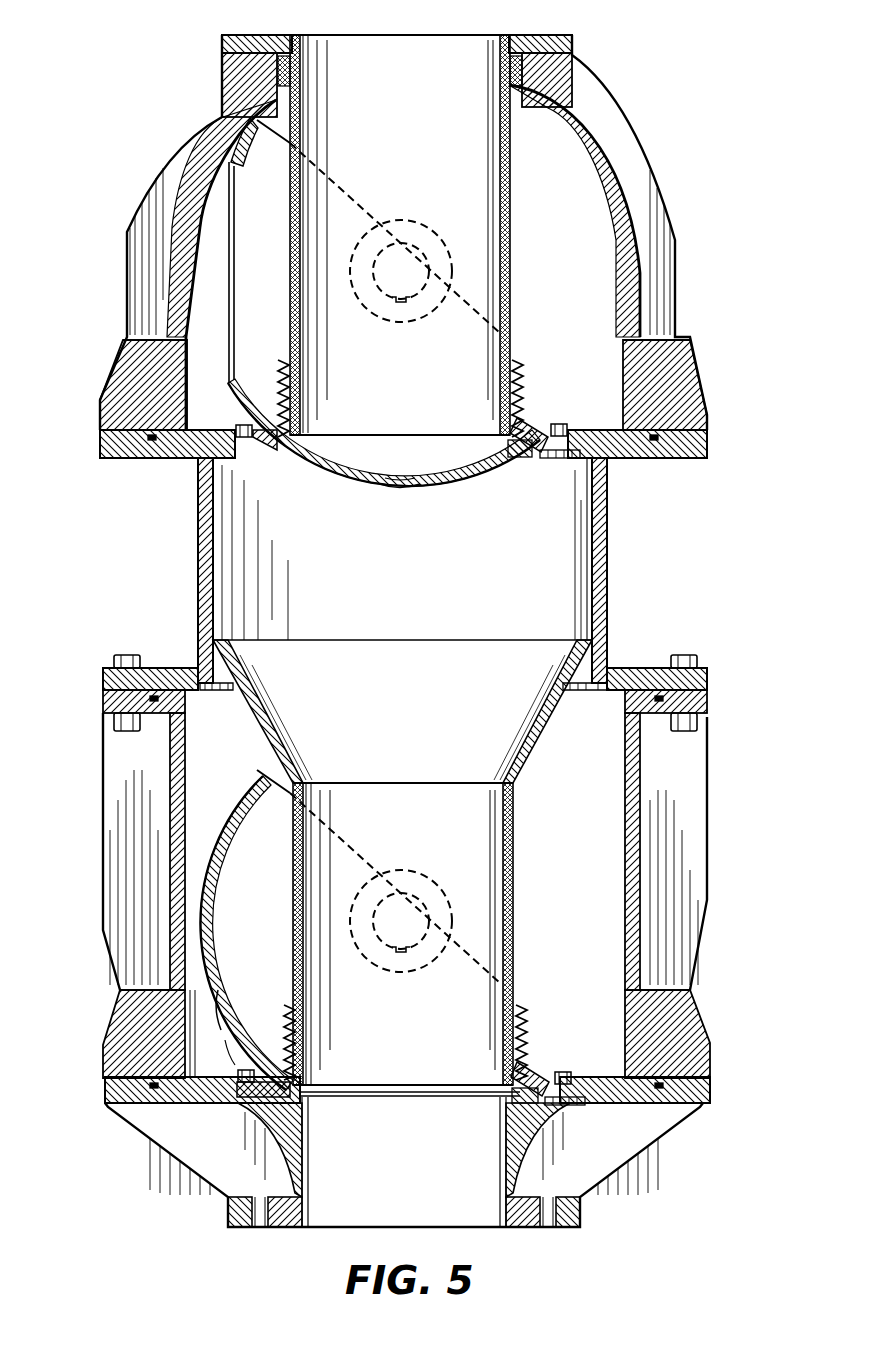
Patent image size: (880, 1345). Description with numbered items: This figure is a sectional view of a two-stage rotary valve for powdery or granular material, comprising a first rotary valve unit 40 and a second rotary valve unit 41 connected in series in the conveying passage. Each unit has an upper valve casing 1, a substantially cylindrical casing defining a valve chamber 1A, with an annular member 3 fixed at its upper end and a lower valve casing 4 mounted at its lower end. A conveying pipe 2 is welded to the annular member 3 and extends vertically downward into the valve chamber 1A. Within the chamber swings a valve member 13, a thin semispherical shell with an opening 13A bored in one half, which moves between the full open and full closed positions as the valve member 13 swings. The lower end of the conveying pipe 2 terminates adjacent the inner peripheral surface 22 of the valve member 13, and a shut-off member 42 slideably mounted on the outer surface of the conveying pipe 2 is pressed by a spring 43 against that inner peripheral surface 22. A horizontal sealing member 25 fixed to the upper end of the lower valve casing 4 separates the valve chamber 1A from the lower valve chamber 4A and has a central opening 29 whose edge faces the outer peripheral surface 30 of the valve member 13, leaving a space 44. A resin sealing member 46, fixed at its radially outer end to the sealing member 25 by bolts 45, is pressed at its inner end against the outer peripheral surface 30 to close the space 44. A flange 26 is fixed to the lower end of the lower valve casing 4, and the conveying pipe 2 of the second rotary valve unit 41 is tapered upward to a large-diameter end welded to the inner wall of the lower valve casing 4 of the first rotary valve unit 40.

The upper valve casing 1 is at (567, 74).
The valve chamber 1A is at (571, 154).
The conveying pipe 2 is at (510, 180).
The annular member 3 is at (524, 36).
The lower valve casing 4 is at (609, 516).
The lower valve chamber 4A is at (576, 575).
The valve member 13 is at (357, 481).
The opening 13A is at (226, 265).
The inner peripheral surface 22 is at (408, 470).
The sealing member 25 is at (709, 445).
The flange 26 is at (620, 671).
The central opening 29 is at (278, 452).
The outer peripheral surface 30 is at (397, 485).
The first rotary valve unit 40 is at (150, 136).
The second rotary valve unit 41 is at (98, 770).
The shut-off member 42 is at (524, 420).
The spring 43 is at (525, 372).
The space 44 is at (518, 458).
The bolts 45 is at (563, 430).
The sealing member 46 is at (547, 460).